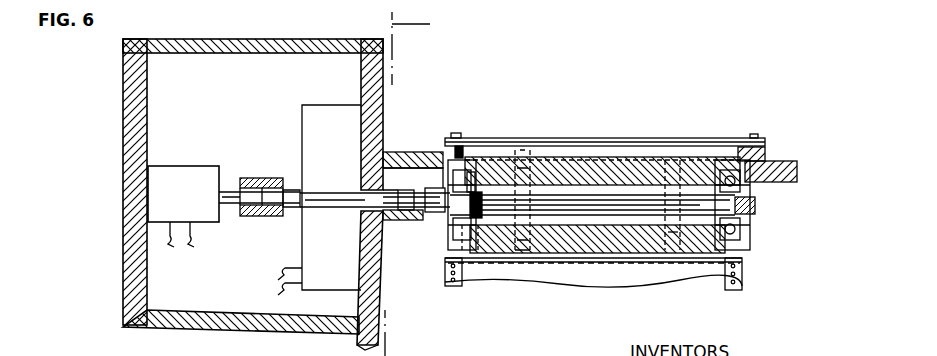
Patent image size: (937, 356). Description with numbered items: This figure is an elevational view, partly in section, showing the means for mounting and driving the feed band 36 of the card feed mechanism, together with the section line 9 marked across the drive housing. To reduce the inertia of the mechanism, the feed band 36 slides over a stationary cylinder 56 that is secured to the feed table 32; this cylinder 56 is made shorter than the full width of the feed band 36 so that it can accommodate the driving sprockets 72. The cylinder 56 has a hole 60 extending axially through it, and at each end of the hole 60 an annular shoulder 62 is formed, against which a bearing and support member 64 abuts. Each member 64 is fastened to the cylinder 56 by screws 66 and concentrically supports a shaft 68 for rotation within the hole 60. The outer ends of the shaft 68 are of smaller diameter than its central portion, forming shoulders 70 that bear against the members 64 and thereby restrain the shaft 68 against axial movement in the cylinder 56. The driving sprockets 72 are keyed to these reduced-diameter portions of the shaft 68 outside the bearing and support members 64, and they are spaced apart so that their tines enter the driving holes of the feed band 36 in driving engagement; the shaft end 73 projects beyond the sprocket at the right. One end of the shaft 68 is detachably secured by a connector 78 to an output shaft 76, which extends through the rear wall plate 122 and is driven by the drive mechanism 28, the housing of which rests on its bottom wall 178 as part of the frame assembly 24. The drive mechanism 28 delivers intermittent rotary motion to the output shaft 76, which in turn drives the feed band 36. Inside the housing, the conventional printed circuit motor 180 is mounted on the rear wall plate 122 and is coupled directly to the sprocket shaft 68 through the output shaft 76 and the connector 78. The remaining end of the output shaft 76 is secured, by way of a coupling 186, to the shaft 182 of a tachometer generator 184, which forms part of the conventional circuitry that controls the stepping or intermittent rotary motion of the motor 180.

The section line 9- 9 is at (391, 24).
The tuning frame assembly 24 is at (628, 136).
The drive mechanism 28 is at (243, 41).
The feed table 32 is at (776, 162).
The feed band 36 is at (602, 157).
The cylinder 56 is at (650, 168).
The hole 60 is at (568, 222).
The annular shoulder 62 is at (472, 190).
The bearing and support member 64 is at (457, 150).
The screws 66 is at (470, 226).
The shaft 68 is at (536, 198).
The shoulders 70 is at (474, 190).
The driving sprockets 72 is at (447, 234).
The shaft 73 is at (758, 211).
The output shaft 76 is at (367, 200).
The connector 78 is at (407, 214).
The rear wall plate 122 is at (378, 106).
The housing bottom wall 178 is at (242, 330).
The printed circuit motor 180 is at (326, 112).
The shaft 182 is at (228, 200).
The tachometer generator 184 is at (196, 172).
The coupling 186 is at (290, 150).